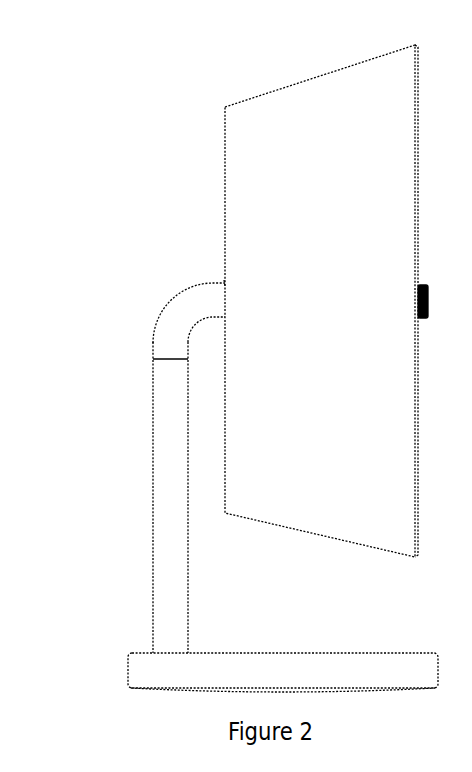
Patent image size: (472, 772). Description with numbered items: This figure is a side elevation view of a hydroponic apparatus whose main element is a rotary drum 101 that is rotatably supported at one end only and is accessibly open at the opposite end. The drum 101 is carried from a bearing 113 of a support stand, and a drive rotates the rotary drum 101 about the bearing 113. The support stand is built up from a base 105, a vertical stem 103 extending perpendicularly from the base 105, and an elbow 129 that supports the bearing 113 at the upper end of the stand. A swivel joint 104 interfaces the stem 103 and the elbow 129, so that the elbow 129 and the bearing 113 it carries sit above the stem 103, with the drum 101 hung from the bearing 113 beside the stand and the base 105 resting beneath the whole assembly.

The rotary drum 101 is at (317, 72).
The vertical stem 103 is at (153, 483).
The swivel joint 104 is at (153, 359).
The base 105 is at (313, 653).
The bearing 113 is at (225, 282).
The elbow 129 is at (173, 305).